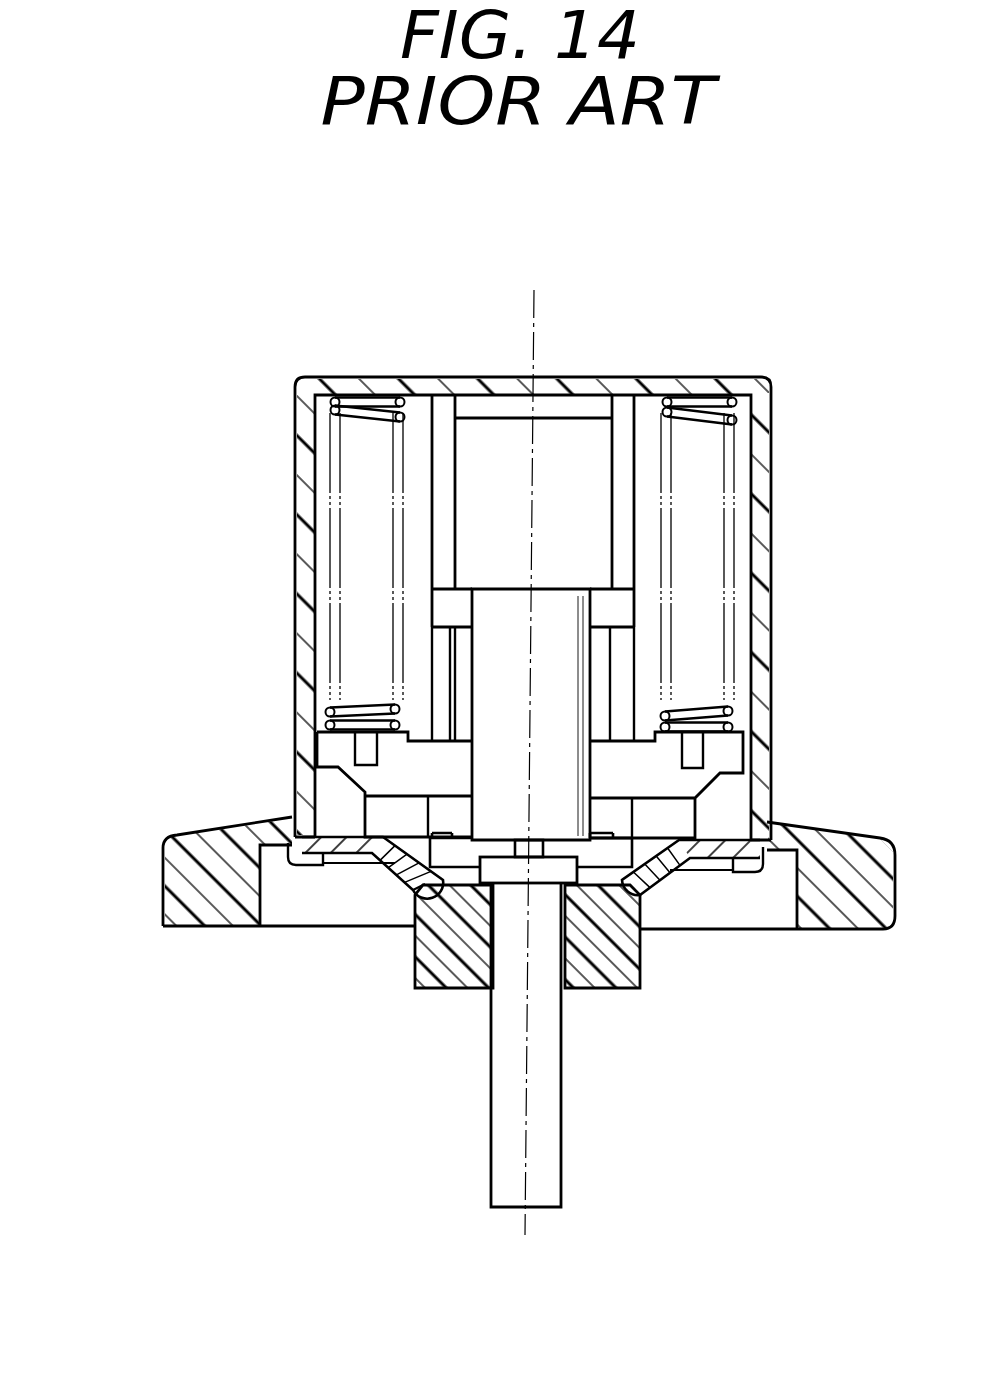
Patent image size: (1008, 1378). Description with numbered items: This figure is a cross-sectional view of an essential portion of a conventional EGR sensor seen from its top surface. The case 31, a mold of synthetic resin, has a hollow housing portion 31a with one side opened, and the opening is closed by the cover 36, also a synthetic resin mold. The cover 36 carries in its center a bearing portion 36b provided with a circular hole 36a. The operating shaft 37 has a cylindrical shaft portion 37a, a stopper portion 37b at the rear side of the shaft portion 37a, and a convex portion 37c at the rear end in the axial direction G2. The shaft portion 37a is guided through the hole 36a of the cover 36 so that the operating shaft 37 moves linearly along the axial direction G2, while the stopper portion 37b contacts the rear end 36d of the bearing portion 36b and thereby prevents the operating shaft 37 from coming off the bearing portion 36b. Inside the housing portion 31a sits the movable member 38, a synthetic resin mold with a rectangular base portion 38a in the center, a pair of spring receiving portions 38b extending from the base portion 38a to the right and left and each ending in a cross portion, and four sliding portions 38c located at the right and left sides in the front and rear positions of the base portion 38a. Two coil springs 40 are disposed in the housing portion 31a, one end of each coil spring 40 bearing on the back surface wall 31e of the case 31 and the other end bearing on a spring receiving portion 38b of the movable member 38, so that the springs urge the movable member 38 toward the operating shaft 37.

The case 31 is at (163, 931).
The housing portion 31a is at (418, 417).
The back surface wall 31e is at (376, 386).
The cover 36 is at (445, 1018).
The circular hole 36a is at (512, 958).
The bearing portion 36b is at (588, 988).
The rear end of bearing portion 36d is at (403, 888).
The operating shaft 37 is at (506, 1077).
The shaft portion 37a is at (552, 1168).
The stopper portion 37b is at (430, 893).
The convex portion 37c is at (565, 872).
The movable member 38 is at (520, 741).
The base portion 38a is at (572, 694).
The spring receiving portion 38b is at (323, 745).
The sliding portion 38c is at (437, 594).
The coil spring 40 is at (320, 408).
The axial direction G2 is at (540, 318).